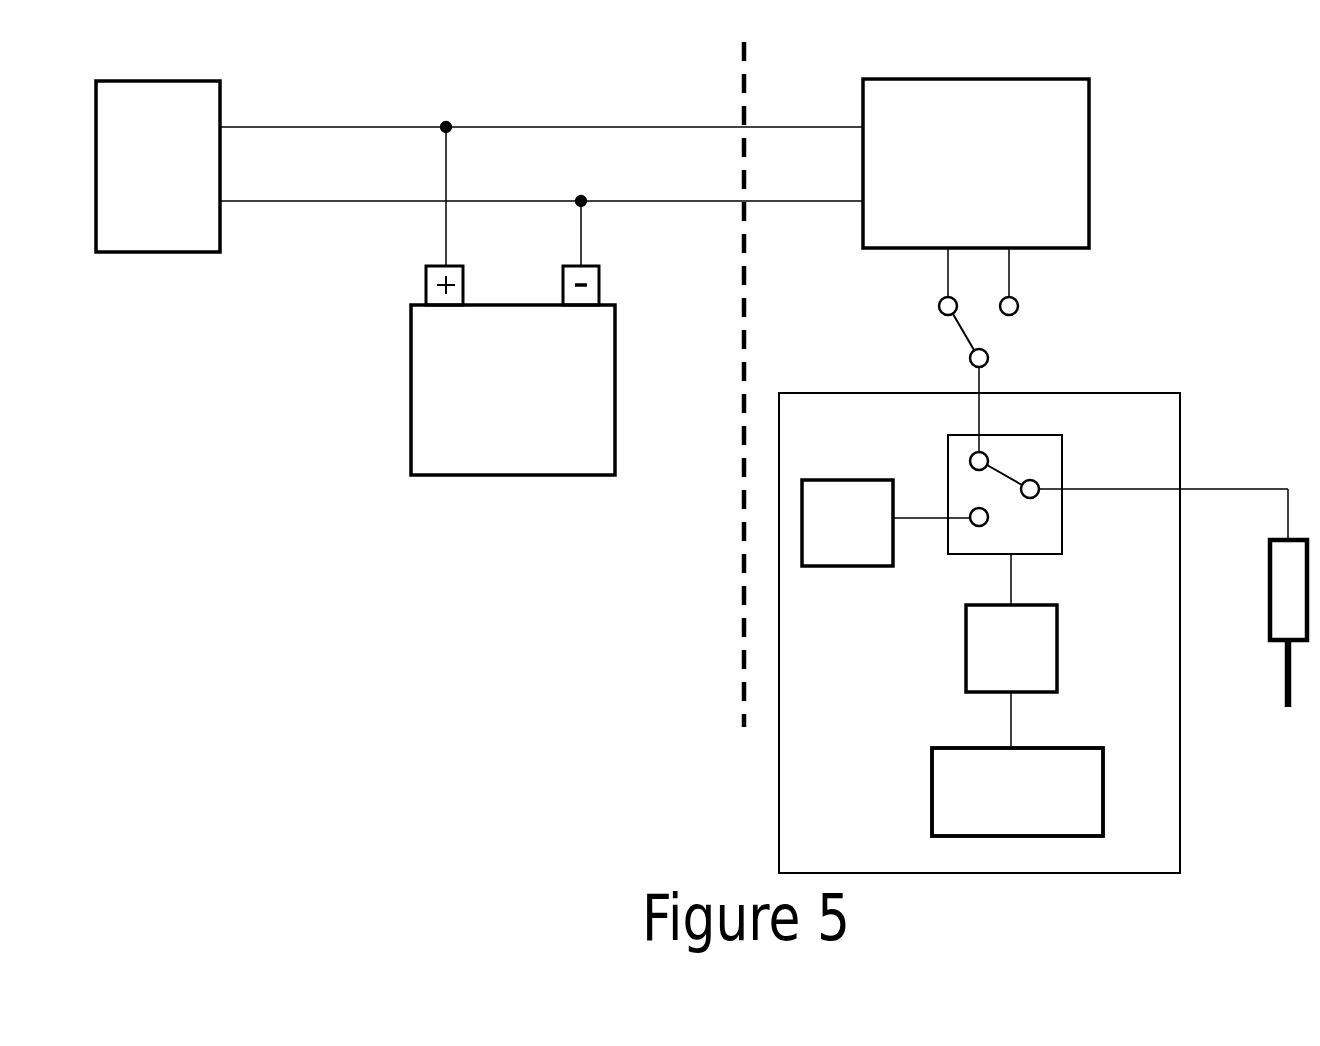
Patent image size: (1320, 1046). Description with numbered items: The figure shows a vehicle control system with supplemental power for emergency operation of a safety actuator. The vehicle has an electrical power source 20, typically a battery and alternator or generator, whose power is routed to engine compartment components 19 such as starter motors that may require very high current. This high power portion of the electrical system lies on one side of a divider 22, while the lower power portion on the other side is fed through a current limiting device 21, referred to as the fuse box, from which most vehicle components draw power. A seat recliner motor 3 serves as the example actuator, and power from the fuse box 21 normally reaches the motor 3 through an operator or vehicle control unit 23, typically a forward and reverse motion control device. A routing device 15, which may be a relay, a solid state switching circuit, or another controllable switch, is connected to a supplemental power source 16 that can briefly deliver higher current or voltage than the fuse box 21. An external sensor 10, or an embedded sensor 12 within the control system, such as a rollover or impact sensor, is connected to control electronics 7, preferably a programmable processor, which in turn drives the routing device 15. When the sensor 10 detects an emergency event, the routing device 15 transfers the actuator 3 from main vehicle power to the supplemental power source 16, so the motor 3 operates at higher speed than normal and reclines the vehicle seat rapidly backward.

The components 19 is at (158, 166).
The electrical power source 20 is at (513, 299).
The current limiting device 21 is at (976, 163).
The divider 22 is at (725, 633).
The control unit 23 is at (1032, 328).
The routing device 15 is at (1050, 463).
The supplemental power source 16 is at (886, 523).
The control electronics 7 is at (1011, 623).
The external sensor 10 is at (1017, 764).
The sensor 12 is at (1017, 792).
The seat recliner motor 3 is at (1260, 610).